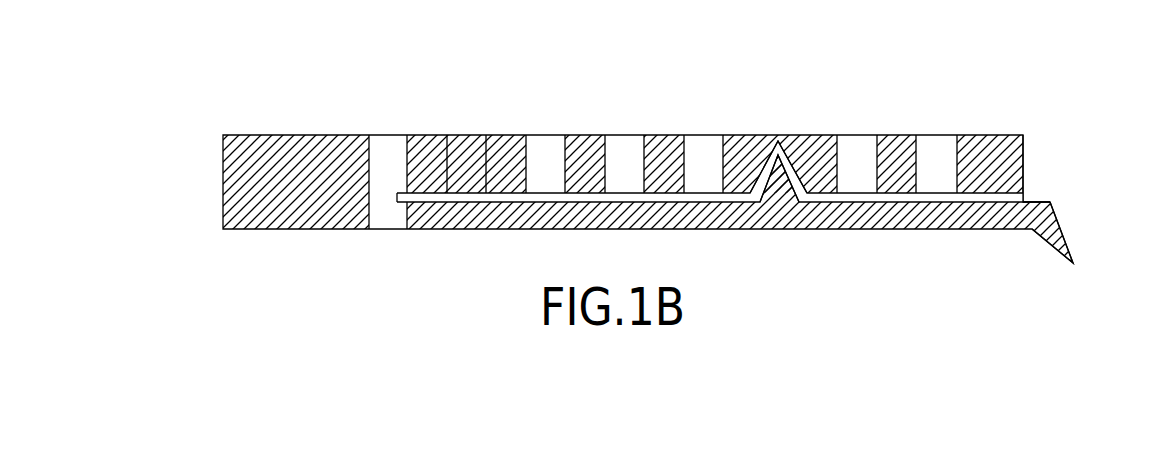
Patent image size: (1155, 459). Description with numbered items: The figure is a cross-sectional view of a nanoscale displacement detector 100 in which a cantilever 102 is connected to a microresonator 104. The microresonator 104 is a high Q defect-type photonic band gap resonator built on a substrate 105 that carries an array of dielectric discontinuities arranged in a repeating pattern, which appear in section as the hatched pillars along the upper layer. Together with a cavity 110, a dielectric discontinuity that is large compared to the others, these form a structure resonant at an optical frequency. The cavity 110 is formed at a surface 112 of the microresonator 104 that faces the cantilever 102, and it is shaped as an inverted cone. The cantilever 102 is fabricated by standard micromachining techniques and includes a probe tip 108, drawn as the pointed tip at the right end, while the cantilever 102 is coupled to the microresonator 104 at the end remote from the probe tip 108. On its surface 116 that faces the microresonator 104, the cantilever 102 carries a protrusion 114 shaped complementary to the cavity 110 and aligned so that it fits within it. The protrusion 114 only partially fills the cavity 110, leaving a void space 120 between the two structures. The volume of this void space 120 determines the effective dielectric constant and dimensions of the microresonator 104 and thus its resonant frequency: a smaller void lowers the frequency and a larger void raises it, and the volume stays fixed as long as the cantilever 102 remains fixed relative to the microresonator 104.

The nanoscale displacement detector 100 is at (186, 100).
The cantilever 102 is at (928, 228).
The microresonator 104 is at (890, 135).
The substrate 105 is at (227, 198).
The probe tip 108 is at (1075, 265).
The cavity 110 is at (798, 165).
The surface of the microresonator 112 is at (1030, 194).
The protrusion 114 is at (781, 168).
The surface of the cantilever 116 is at (1049, 202).
The void space 120 is at (769, 148).